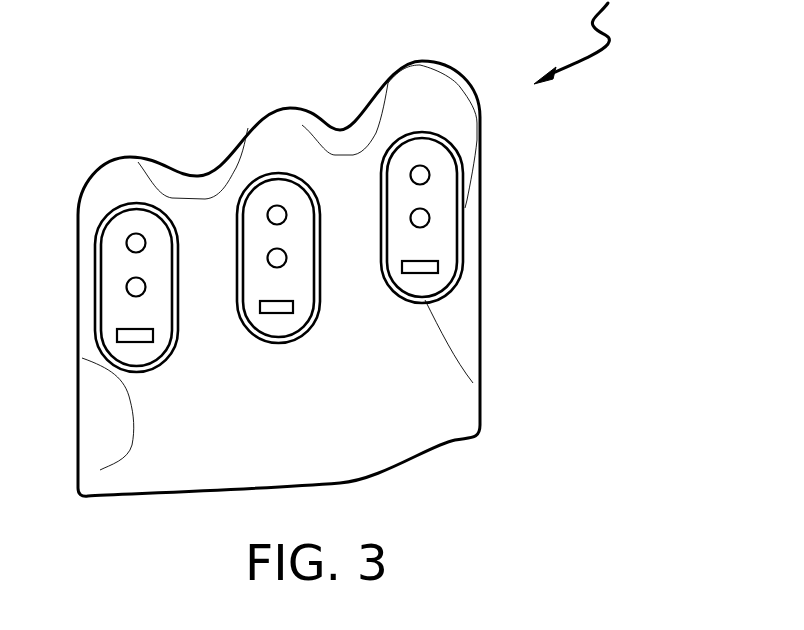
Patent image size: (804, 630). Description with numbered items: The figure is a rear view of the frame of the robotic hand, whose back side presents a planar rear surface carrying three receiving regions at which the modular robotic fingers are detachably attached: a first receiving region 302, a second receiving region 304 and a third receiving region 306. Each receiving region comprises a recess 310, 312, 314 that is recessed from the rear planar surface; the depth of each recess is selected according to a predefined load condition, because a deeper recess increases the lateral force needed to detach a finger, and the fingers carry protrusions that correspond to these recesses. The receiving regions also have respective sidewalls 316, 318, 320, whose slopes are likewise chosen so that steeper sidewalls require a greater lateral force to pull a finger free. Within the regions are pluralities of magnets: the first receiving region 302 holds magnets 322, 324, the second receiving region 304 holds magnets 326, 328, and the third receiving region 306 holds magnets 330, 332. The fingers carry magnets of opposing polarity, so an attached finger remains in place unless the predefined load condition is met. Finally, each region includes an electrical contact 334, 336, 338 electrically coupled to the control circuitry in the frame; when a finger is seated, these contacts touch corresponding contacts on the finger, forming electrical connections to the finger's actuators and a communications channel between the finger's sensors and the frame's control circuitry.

The first receiving region 302 is at (444, 139).
The second receiving region 304 is at (273, 177).
The third receiving region 306 is at (137, 205).
The recess 310 is at (447, 254).
The recess 312 is at (303, 294).
The recess 314 is at (160, 323).
The sidewall 316 is at (396, 301).
The sidewall 318 is at (262, 345).
The sidewall 320 is at (170, 362).
The magnet 322 is at (410, 175).
The magnet 324 is at (410, 218).
The magnet 326 is at (267, 215).
The magnet 328 is at (268, 259).
The magnet 330 is at (126, 243).
The magnet 332 is at (126, 287).
The electrical contact 334 is at (402, 270).
The electrical contact 336 is at (266, 303).
The electrical contact 338 is at (118, 336).